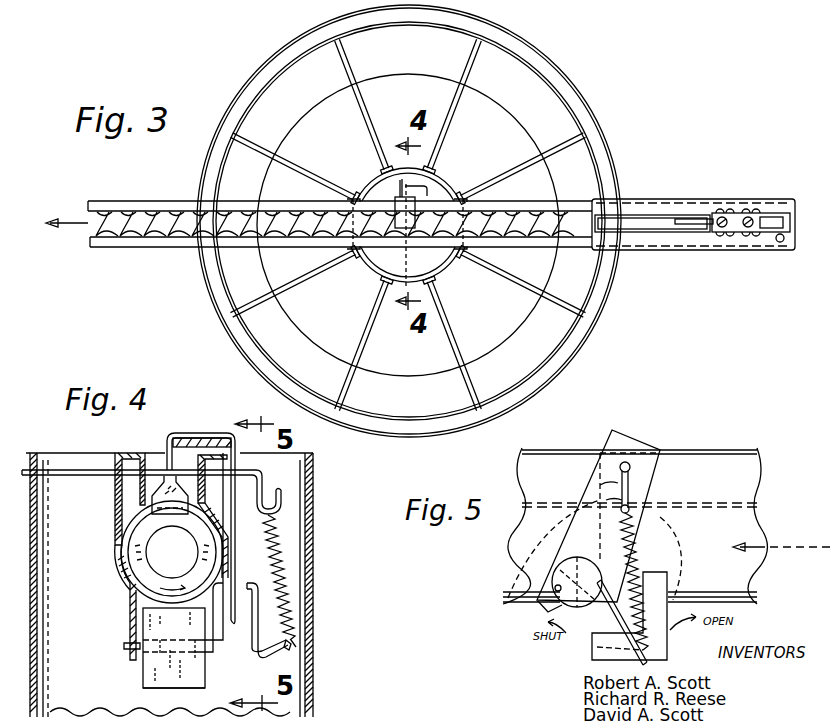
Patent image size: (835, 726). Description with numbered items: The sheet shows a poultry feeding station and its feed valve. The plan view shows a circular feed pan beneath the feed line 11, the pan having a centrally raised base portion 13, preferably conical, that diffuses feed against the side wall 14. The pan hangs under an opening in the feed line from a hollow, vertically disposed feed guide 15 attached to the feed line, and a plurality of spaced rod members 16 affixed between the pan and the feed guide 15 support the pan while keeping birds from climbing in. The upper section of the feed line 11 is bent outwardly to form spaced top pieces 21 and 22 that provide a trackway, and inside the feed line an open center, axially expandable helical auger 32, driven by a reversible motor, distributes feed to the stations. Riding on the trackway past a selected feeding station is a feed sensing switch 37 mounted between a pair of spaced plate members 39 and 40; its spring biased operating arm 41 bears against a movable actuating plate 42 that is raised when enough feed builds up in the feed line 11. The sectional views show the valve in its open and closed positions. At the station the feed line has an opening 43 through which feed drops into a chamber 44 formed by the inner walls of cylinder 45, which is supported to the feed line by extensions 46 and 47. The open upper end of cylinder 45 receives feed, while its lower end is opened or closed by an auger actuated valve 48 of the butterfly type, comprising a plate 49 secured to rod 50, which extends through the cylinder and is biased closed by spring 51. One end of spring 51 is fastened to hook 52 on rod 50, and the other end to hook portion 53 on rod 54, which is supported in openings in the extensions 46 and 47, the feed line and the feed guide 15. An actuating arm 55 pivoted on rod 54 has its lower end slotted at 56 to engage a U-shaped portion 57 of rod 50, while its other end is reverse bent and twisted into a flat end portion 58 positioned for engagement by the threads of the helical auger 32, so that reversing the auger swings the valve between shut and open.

In FIG. 4, the feed line 11 is at (120, 533).
In FIG. 3, the centrally raised base portion 13 is at (491, 99).
In FIG. 3, the side wall 14 is at (533, 53).
In FIG. 3, the feed guide 15 is at (448, 271).
In FIG. 4, the feed guide 15 is at (303, 593).
In FIG. 3, the rod members 16 is at (302, 165).
In FIG. 3, the top piece 21 is at (122, 248).
In FIG. 4, the top piece 21 is at (115, 454).
In FIG. 3, the top piece 22 is at (126, 205).
In FIG. 4, the top piece 22 is at (209, 455).
In FIG. 5, the top piece 22 is at (635, 526).
In FIG. 3, the helical auger 32 is at (174, 230).
In FIG. 5, the helical auger 32 is at (684, 549).
In FIG. 3, the feed sensing switch 37 is at (728, 215).
In FIG. 3, the plate member 39 is at (693, 251).
In FIG. 3, the plate member 40 is at (630, 199).
In FIG. 3, the spring biased operating arm 41 is at (682, 216).
In FIG. 3, the actuating plate 42 is at (648, 227).
In FIG. 4, the opening 43 is at (174, 648).
In FIG. 4, the chamber 44 is at (135, 622).
In FIG. 4, the cylinder 45 is at (127, 596).
In FIG. 4, the extension 46 is at (115, 501).
In FIG. 4, the extension 47 is at (225, 520).
In FIG. 5, the extension 47 is at (655, 466).
In FIG. 4, the auger actuated valve 48 is at (220, 655).
In FIG. 5, the auger actuated valve 48 is at (577, 643).
In FIG. 4, the plate 49 is at (179, 689).
In FIG. 5, the plate 49 is at (666, 655).
In FIG. 4, the rod 50 is at (133, 657).
In FIG. 4, the spring 51 is at (279, 550).
In FIG. 5, the spring 51 is at (603, 583).
In FIG. 4, the hook 52 is at (292, 652).
In FIG. 4, the hook portion 53 is at (283, 507).
In FIG. 5, the hook portion 53 is at (630, 505).
In FIG. 4, the rod 54 is at (55, 469).
In FIG. 4, the actuating arm 55 is at (279, 496).
In FIG. 5, the actuating arm 55 is at (598, 487).
In FIG. 5, the slot 56 is at (547, 604).
In FIG. 4, the U-shaped portion 57 is at (248, 585).
In FIG. 5, the U-shaped portion 57 is at (577, 571).
In FIG. 4, the flat end portion 58 is at (159, 492).
In FIG. 5, the flat end portion 58 is at (612, 503).